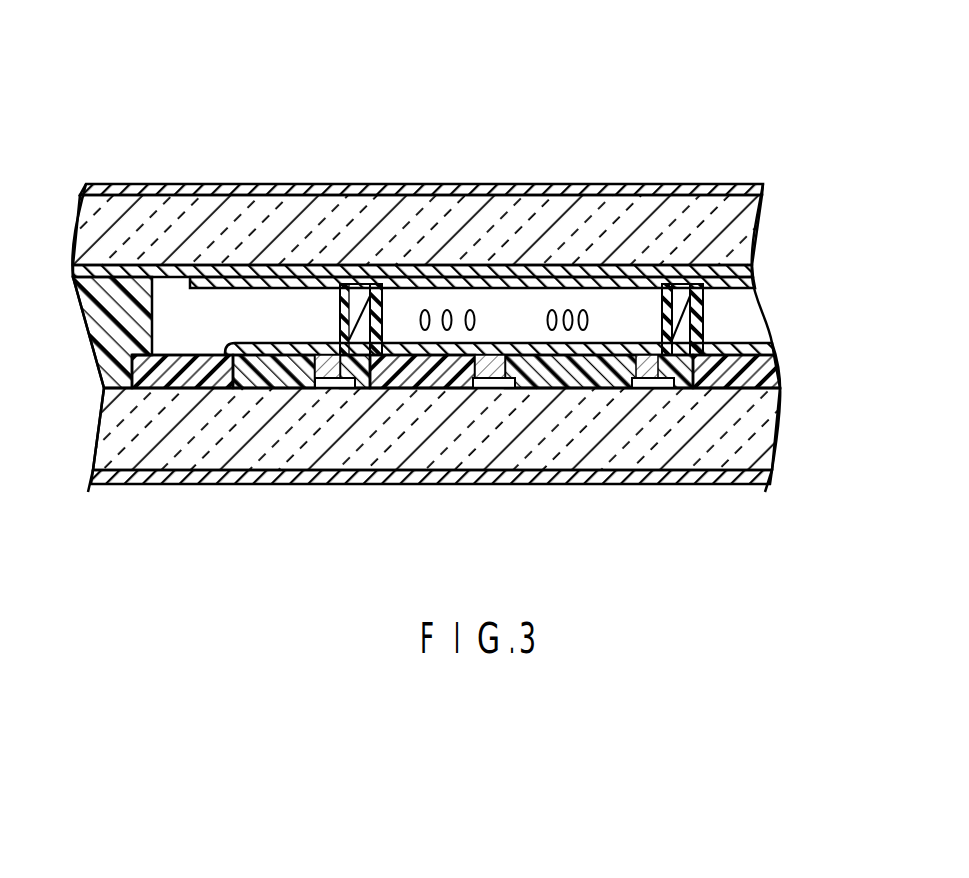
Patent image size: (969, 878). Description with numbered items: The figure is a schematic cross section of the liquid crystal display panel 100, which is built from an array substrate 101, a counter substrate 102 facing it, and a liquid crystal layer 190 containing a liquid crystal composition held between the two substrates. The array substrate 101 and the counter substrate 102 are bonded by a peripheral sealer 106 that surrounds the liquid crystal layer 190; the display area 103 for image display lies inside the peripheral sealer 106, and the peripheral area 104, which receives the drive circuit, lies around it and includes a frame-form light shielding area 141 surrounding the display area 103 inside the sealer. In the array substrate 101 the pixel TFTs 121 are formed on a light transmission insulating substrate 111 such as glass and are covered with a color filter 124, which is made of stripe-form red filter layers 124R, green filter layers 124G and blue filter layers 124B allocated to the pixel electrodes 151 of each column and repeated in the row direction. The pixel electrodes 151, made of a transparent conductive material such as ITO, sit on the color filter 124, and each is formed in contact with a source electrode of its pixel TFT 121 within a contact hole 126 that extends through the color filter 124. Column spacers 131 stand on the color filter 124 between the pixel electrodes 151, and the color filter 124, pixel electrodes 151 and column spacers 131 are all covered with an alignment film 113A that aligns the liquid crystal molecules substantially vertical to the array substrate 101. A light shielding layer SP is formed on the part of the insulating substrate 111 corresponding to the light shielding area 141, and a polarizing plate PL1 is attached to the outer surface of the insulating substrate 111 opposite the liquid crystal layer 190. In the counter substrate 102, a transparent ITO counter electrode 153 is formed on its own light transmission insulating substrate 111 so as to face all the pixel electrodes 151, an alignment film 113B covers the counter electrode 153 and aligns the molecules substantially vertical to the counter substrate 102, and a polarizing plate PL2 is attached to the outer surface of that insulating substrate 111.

The liquid crystal display panel 100 is at (787, 157).
The array substrate 101 is at (870, 330).
The counter substrate 102 is at (869, 180).
The display area 103 is at (245, 125).
The peripheral area 104 is at (57, 58).
The peripheral sealer 106 is at (105, 350).
The light transmission insulating substrate 111 is at (752, 197).
The alignment film 113A is at (772, 350).
The alignment film 113B is at (748, 278).
The pixel TFT 121 is at (342, 388).
The color filter 124 is at (785, 369).
The blue filter layer 124B is at (242, 388).
The green filter layer 124G is at (400, 388).
The red filter layer 124R is at (560, 388).
The contact hole 126 is at (326, 378).
The column spacer 131 is at (362, 286).
The light shielding area 141 is at (237, 125).
The pixel electrode 151 is at (277, 388).
The counter electrode 153 is at (748, 268).
The liquid crystal layer 190 is at (773, 288).
The polarizing plate PL1 is at (733, 485).
The polarizing plate PL2 is at (613, 184).
The light shielding layer SP is at (140, 388).